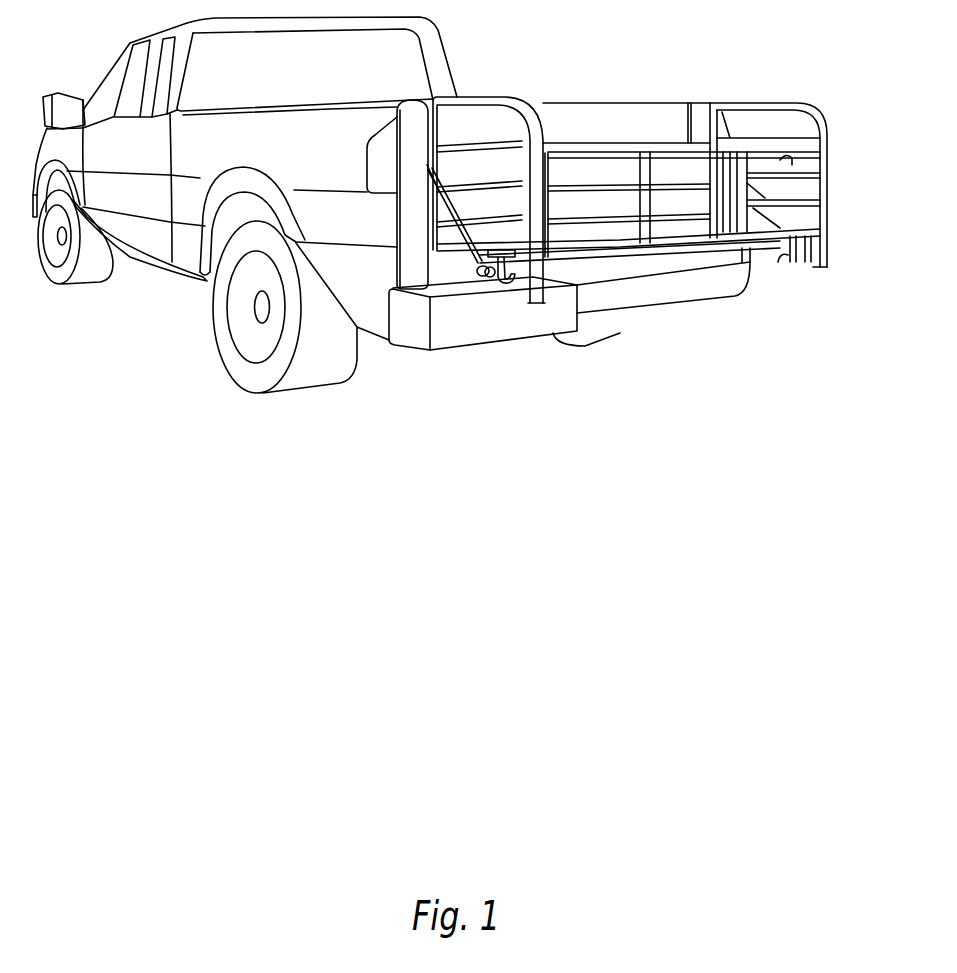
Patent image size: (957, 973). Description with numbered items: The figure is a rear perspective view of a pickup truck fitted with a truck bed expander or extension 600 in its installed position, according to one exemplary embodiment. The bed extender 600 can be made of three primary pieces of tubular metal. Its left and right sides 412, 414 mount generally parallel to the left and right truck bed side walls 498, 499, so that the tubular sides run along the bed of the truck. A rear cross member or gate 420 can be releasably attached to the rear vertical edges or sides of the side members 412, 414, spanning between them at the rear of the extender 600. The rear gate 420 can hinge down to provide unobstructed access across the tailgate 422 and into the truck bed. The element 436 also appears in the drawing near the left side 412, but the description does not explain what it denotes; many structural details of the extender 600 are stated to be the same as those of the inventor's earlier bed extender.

The pickup truck 498 is at (297, 112).
The truck bed 499 is at (660, 103).
The rack system 600 is at (828, 112).
The front rack section 412 is at (481, 97).
The rear rack section 414 is at (770, 105).
The bed side panel 420 is at (666, 144).
The lower frame member 422 is at (736, 280).
The support strut 436 is at (438, 202).